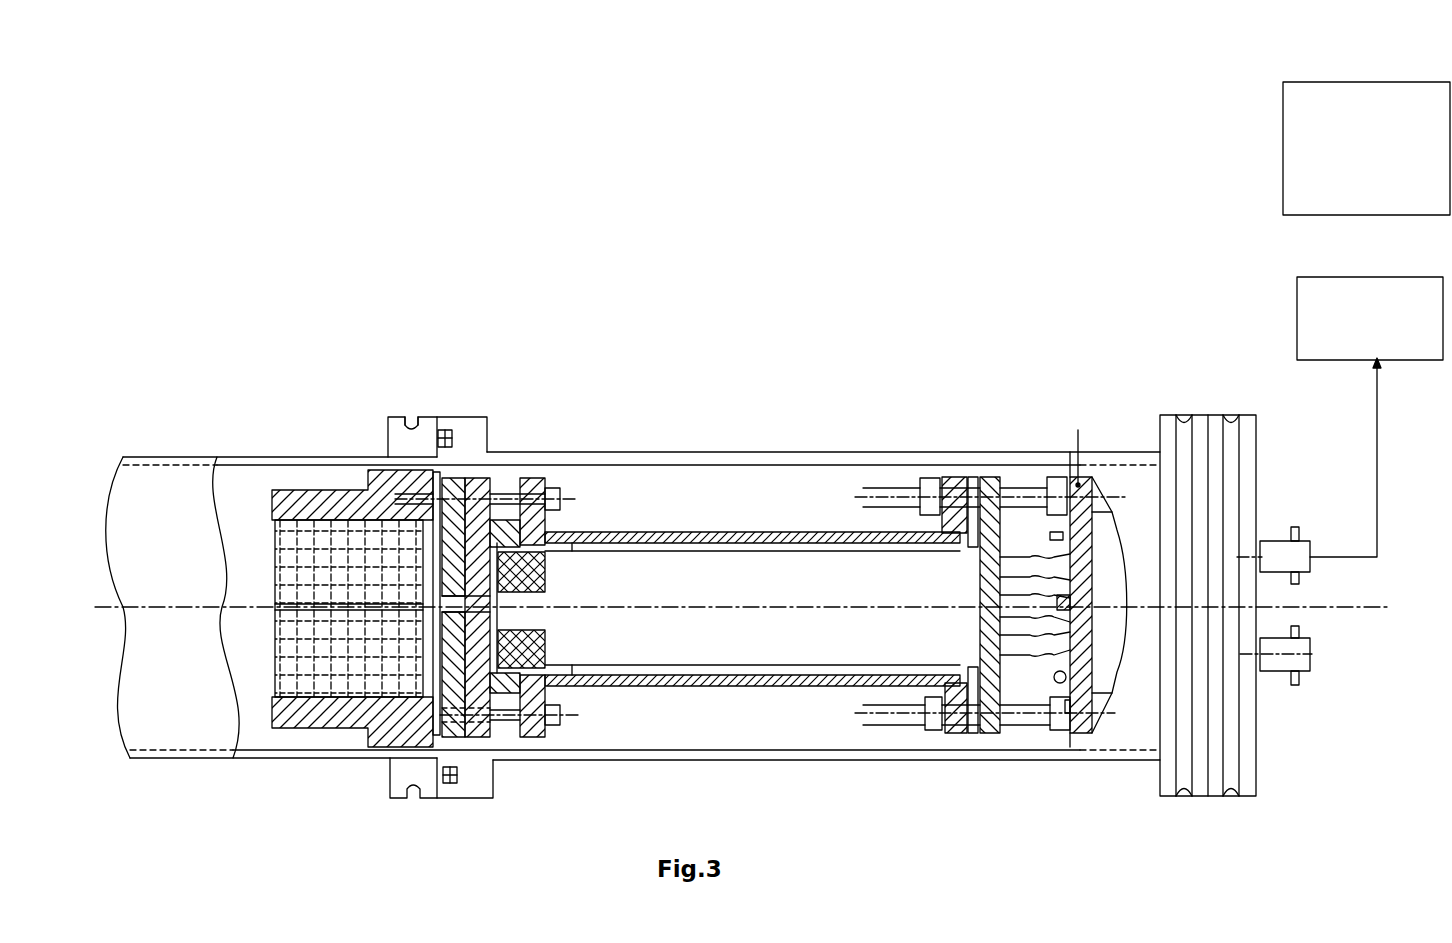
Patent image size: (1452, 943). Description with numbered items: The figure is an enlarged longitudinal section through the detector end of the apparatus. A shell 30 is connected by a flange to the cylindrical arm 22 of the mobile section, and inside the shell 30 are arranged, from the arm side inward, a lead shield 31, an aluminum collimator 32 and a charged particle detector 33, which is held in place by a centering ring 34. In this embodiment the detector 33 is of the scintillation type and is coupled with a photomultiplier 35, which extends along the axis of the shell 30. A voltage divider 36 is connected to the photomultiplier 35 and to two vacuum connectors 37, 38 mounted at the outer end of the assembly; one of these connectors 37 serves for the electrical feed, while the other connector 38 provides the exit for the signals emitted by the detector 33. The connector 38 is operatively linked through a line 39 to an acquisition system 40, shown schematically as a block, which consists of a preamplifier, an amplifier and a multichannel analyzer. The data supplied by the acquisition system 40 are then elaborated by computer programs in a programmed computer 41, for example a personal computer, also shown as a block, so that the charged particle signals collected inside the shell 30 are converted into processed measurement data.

The cylindrical arm 22 is at (247, 458).
The shell 30 is at (960, 452).
The lead shield 31 is at (285, 486).
The aluminum collimator 32 is at (479, 596).
The charged particle detector 33 is at (517, 598).
The centering ring 34 is at (593, 533).
The photomultiplier 35 is at (752, 530).
The voltage divider 36 is at (1000, 545).
The vacuum connector 37 is at (1308, 624).
The vacuum connector 38 is at (1312, 528).
The line 39 is at (1380, 477).
The acquisition system 40 is at (1310, 327).
The programmed computer 41 is at (1330, 88).